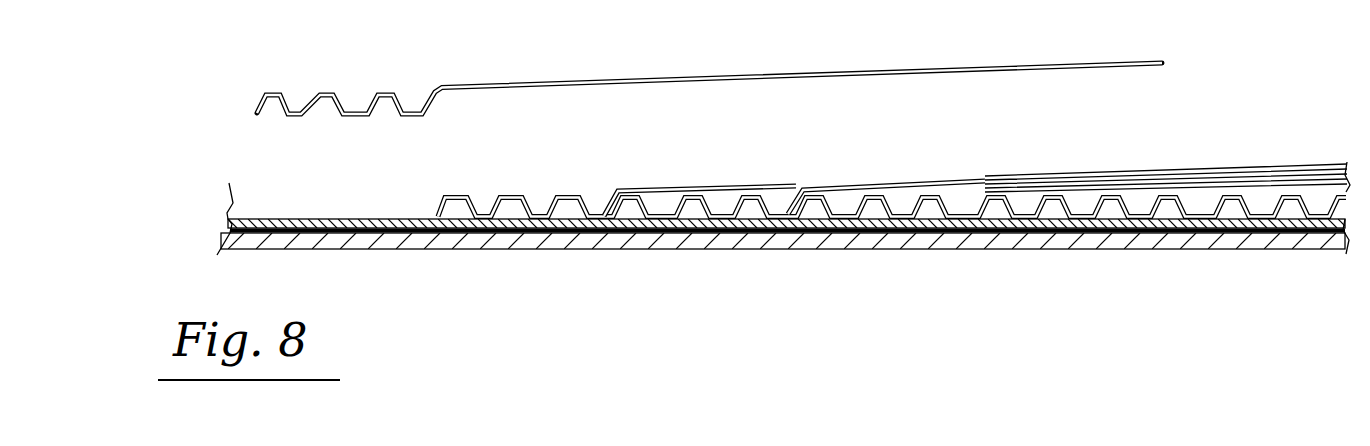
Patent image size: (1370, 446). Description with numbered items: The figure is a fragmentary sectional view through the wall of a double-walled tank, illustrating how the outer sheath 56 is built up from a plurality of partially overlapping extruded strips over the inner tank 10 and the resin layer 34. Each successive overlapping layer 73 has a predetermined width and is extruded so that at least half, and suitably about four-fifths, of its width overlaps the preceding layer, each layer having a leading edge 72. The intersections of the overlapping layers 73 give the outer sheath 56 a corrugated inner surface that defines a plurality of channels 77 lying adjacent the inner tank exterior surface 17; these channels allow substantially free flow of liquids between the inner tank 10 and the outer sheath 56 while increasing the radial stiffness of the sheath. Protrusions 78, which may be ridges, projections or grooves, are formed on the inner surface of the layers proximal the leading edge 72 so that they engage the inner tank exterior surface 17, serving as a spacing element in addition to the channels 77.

The inner tank 10 is at (1302, 248).
The inner tank exterior surface 17 is at (400, 228).
The resin layer 34 is at (277, 218).
The outer sheath 56 is at (1187, 169).
The leading edge 72 is at (801, 197).
The overlapping layer 73 is at (607, 82).
The channel 77 is at (801, 197).
The protrusion 78 is at (327, 110).